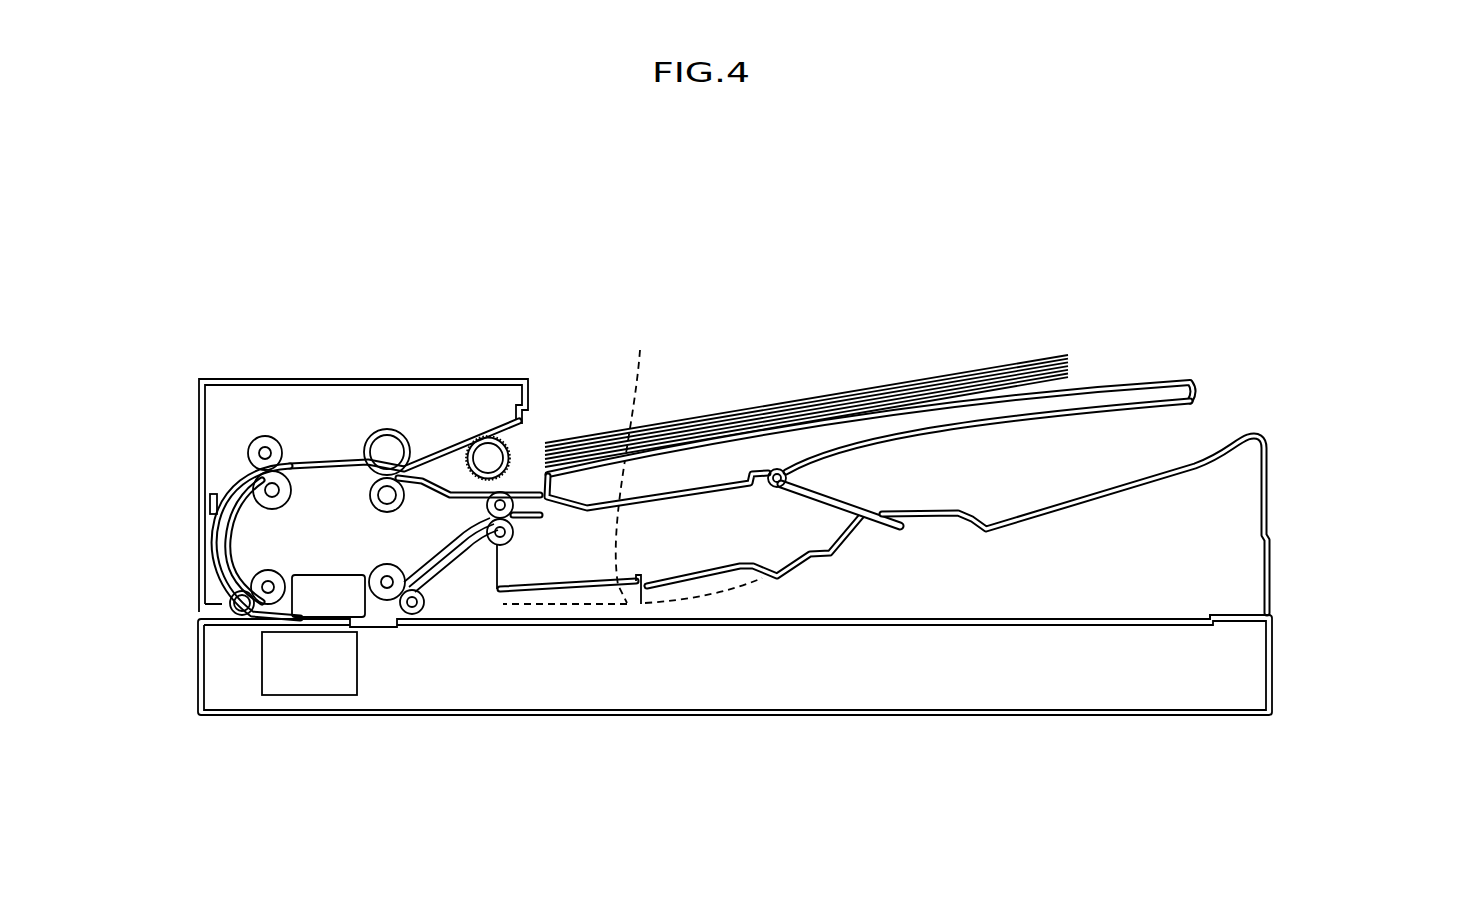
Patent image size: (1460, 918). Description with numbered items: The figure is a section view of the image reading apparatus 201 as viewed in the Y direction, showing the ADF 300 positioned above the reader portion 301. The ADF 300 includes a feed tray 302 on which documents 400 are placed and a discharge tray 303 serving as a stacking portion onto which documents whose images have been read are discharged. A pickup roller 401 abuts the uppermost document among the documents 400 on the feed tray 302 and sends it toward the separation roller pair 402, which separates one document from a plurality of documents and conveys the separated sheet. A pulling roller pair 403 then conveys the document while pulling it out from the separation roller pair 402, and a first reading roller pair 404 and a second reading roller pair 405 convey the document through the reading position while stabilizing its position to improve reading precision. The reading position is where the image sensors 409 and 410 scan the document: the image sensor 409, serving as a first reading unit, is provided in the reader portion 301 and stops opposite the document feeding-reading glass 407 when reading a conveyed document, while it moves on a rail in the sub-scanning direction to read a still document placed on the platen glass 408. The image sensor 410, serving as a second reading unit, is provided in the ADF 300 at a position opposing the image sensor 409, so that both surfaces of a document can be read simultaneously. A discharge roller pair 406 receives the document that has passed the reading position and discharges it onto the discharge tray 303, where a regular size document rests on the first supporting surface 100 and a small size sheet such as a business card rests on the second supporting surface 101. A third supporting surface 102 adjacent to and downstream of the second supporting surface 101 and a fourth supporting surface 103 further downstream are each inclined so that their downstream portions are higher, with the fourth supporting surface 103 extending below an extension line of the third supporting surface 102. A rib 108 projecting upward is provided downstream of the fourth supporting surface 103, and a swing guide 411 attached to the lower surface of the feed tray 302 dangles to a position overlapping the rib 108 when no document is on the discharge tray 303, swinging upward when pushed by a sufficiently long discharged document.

The image reading apparatus 201 is at (972, 203).
The ADF 300 is at (275, 378).
The reader portion 301 is at (1278, 672).
The feed tray 302 is at (1135, 366).
The discharge tray 303 is at (1097, 490).
The documents 400 is at (862, 392).
The pickup roller 401 is at (490, 436).
The separation roller pair 402 is at (383, 429).
The pulling roller pair 403 is at (252, 437).
The first reading roller pair 404 is at (235, 530).
The second reading roller pair 405 is at (392, 625).
The discharge roller pair 406 is at (512, 536).
The document feeding-reading glass 407 is at (233, 628).
The platen glass 408 is at (935, 620).
The image sensor 409 is at (293, 673).
The image sensor 410 is at (318, 590).
The swing guide 411 is at (866, 515).
The first supporting surface 100 is at (660, 572).
The second supporting surface 101 is at (581, 461).
The third supporting surface 102 is at (773, 572).
The fourth supporting surface 103 is at (813, 553).
The rib 108 is at (913, 512).